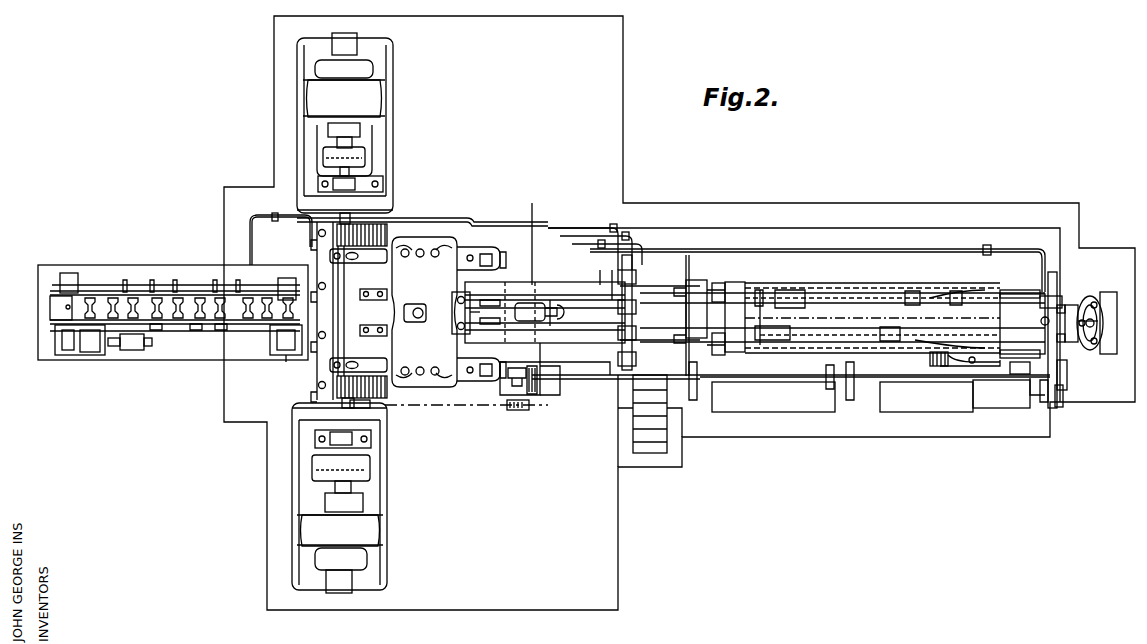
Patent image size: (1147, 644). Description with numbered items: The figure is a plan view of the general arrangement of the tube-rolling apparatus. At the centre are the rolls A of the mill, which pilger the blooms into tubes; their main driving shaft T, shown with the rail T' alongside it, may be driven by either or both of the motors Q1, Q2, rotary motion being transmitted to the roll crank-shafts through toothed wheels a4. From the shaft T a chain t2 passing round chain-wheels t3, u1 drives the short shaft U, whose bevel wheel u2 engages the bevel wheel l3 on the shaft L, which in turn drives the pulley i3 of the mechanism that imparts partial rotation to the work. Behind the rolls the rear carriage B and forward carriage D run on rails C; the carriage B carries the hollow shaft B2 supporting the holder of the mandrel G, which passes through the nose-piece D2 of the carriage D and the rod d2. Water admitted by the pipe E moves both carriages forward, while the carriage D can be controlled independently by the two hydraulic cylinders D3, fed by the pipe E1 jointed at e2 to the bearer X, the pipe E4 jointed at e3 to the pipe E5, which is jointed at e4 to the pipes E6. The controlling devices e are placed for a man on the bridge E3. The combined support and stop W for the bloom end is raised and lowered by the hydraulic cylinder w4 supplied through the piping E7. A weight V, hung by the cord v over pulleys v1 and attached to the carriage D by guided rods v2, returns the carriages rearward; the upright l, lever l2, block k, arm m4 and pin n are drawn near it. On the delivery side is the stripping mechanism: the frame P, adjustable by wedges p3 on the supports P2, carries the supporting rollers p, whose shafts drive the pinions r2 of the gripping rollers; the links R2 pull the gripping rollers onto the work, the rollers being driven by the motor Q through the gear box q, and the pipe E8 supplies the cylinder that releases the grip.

The motor Q1 is at (345, 123).
The motor Q2 is at (339, 498).
The main driving shaft T is at (362, 299).
The rail T' is at (352, 337).
The toothed wheels a4 is at (316, 233).
The pipe E8 is at (428, 203).
The frame P is at (52, 305).
The side bars or links R2 is at (167, 292).
The pinions r2 is at (200, 330).
The wedges p3 is at (69, 273).
The supports P2 is at (45, 338).
The supporting rollers p is at (74, 306).
The motor Q is at (90, 341).
The gear box q is at (130, 352).
The rolls A is at (433, 312).
The combined support and stop W is at (455, 312).
The rails C is at (548, 283).
The mandrel G is at (539, 313).
The hydraulic cylinder w4 is at (556, 327).
The bevel wheel u2 is at (505, 368).
The short shaft U is at (512, 390).
The chain-wheel u1 is at (516, 410).
The bevel wheel l3 is at (543, 384).
The chain-wheel t3 is at (358, 409).
The chain t2 is at (410, 407).
The shaft L is at (600, 380).
The piping E7 is at (616, 246).
The bridge E3 is at (660, 315).
The controlling devices e is at (625, 306).
The rear carriage B is at (900, 290).
The forward carriage D is at (696, 309).
The nose-piece D2 is at (689, 288).
The guided rods v2 is at (724, 290).
The cord or chain v is at (748, 290).
The rod d2 is at (762, 320).
The hydraulic rams and cylinders D3 is at (828, 300).
The hollow shaft B2 is at (872, 319).
The pipe E1 is at (858, 340).
The pipes E6 is at (932, 298).
The pipe E is at (817, 262).
The bearer X is at (930, 360).
The joint e2 is at (966, 371).
The pipe E4 is at (962, 366).
The joint e4 is at (978, 348).
The pulleys v1 is at (1018, 290).
The joint e3 is at (1021, 365).
The pipe E5 is at (1035, 395).
The lever l2 is at (1048, 402).
The upright plate l is at (1053, 283).
The pulley i3 is at (1055, 298).
The block k is at (1077, 323).
The weight V is at (1092, 350).
The arm m4 is at (1066, 372).
The pin n is at (1062, 402).